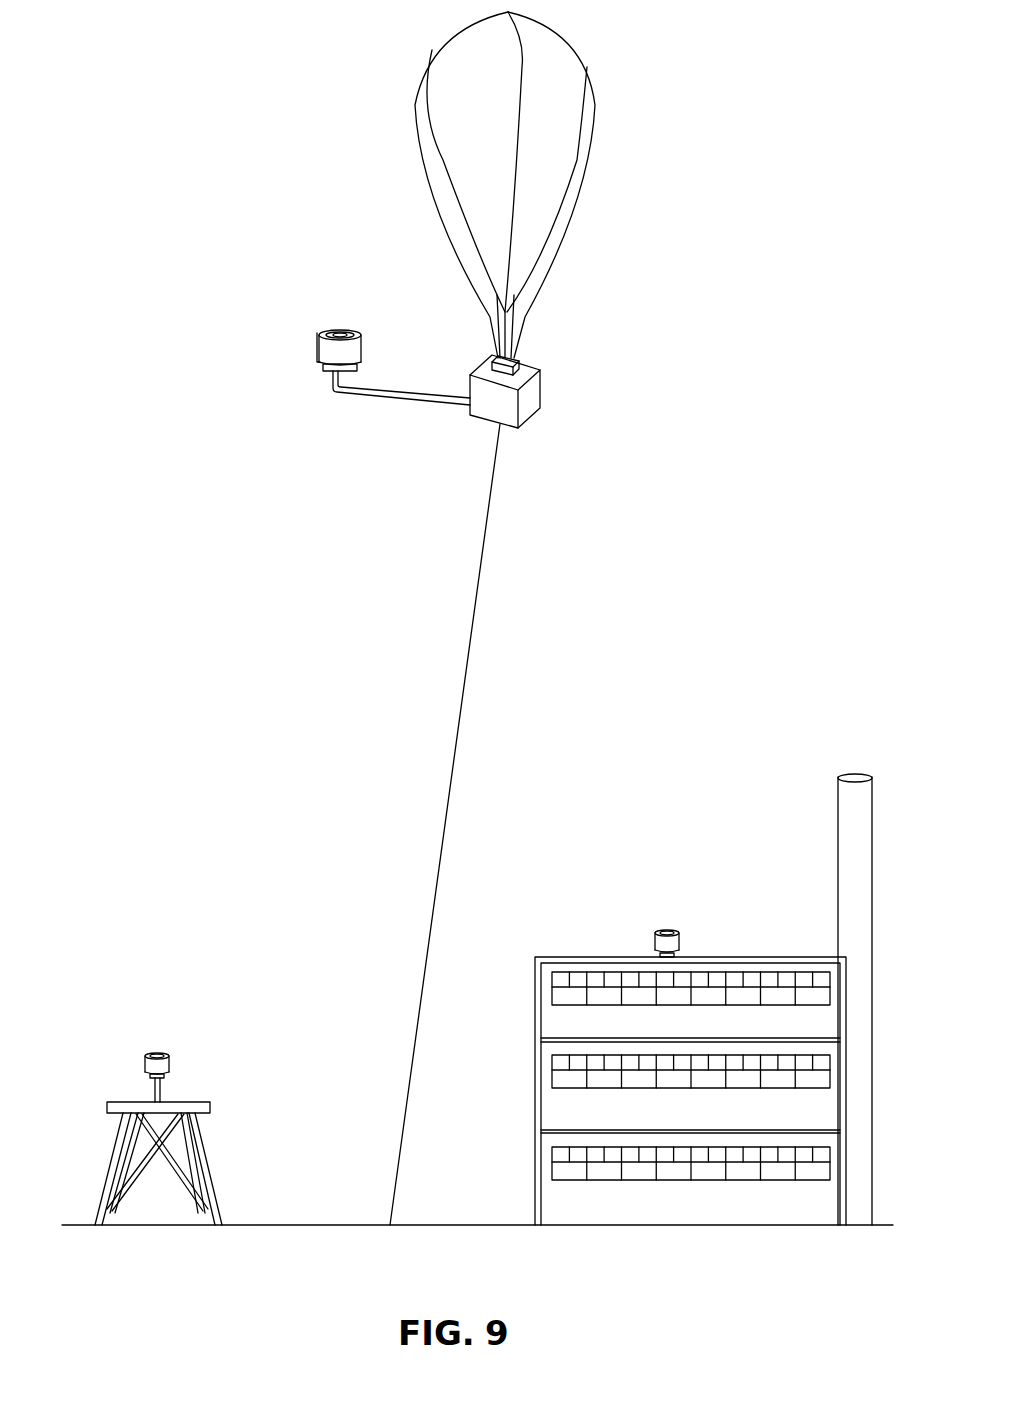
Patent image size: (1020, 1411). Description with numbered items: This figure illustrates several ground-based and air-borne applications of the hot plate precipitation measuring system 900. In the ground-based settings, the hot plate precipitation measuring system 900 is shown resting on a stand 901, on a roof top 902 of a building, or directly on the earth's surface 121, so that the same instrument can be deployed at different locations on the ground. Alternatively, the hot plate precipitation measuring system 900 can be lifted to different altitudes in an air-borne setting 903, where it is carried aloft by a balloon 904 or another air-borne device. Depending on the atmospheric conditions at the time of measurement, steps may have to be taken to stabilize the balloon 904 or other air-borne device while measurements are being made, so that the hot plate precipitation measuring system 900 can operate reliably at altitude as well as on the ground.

The hot plate precipitation measuring system 900 is at (292, 353).
The stand 901 is at (210, 1105).
The roof top 902 is at (776, 955).
The air-borne setting 903 is at (568, 386).
The balloon 904 is at (590, 73).
The earth's surface 121 is at (322, 1225).